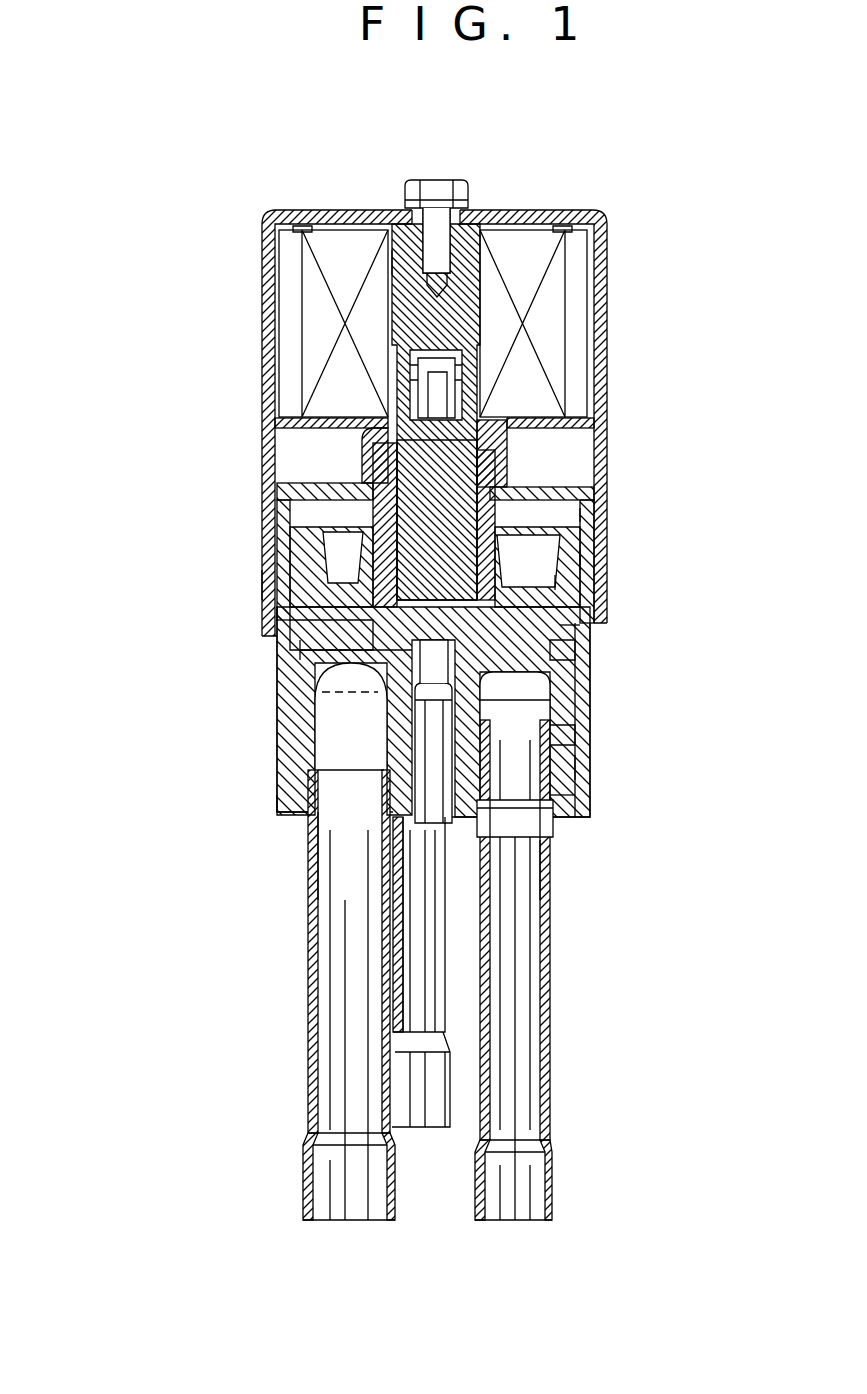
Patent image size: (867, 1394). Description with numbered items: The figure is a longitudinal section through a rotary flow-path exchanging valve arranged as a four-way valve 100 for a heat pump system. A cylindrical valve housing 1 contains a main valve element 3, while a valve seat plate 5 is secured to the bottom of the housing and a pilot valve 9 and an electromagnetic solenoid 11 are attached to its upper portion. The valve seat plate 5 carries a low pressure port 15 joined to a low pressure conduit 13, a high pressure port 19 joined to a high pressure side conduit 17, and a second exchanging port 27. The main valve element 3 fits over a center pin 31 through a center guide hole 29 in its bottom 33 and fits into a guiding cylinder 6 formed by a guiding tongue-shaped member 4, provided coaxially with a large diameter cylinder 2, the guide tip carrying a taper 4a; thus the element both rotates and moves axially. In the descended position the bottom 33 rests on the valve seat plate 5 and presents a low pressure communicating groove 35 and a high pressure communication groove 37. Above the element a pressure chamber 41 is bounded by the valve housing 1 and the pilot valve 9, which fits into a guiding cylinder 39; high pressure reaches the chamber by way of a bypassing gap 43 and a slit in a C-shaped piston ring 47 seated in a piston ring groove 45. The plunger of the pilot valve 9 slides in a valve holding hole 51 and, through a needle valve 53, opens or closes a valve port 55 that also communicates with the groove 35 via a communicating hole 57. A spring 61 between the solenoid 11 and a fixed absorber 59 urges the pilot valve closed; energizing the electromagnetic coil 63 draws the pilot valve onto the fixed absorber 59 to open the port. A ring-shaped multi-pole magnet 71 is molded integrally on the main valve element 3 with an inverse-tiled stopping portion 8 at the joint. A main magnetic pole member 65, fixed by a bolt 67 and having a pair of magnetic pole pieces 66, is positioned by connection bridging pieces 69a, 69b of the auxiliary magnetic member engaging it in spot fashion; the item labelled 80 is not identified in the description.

The four-way valve 100 is at (622, 388).
The main magnetic pole member 65 is at (607, 237).
The bolt 67 is at (437, 180).
The electromagnetic coil 63 is at (522, 240).
The fixed absorber 59 is at (392, 262).
The guiding cylinder 39 is at (392, 372).
The electromagnetic solenoid 11 is at (578, 320).
The connection bridging piece 69a is at (330, 418).
The connection bridging piece 69b is at (580, 397).
The taper 4a is at (300, 482).
The guiding tongue-shaped member 4 is at (287, 515).
The guiding cylinder 6 is at (590, 455).
The spring 61 is at (385, 455).
The pilot valve 9 is at (452, 508).
The valve housing 1 is at (618, 672).
The valve holding hole 51 is at (292, 556).
The pressure chamber 41 is at (540, 540).
The center guide hole 29 is at (318, 718).
The low pressure communicating groove 35 is at (323, 706).
The communicating hole 57 is at (322, 692).
The needle valve 53 is at (285, 632).
The valve port 55 is at (300, 660).
The magnetic pole pieces 66 is at (265, 578).
The center pin 31 is at (418, 832).
The high pressure communication groove 37 is at (590, 703).
The low pressure conduit 13 is at (308, 1033).
The low pressure port 15 is at (313, 838).
The bottom 33 is at (273, 803).
The second exchanging port 27 is at (410, 1120).
The high pressure side conduit 17 is at (547, 1027).
The bypassing gap 43 is at (555, 830).
The high pressure port 19 is at (555, 862).
The main valve element 3 is at (590, 733).
The large diameter cylinder 2 is at (590, 767).
The valve seat plate 5 is at (590, 803).
The piston ring groove 45 is at (587, 650).
The C-shaped piston ring 47 is at (588, 647).
The multi-pole magnet 71 is at (594, 558).
The inverse-tiled stopping portion 8 is at (560, 580).
The gasket 80 is at (594, 515).